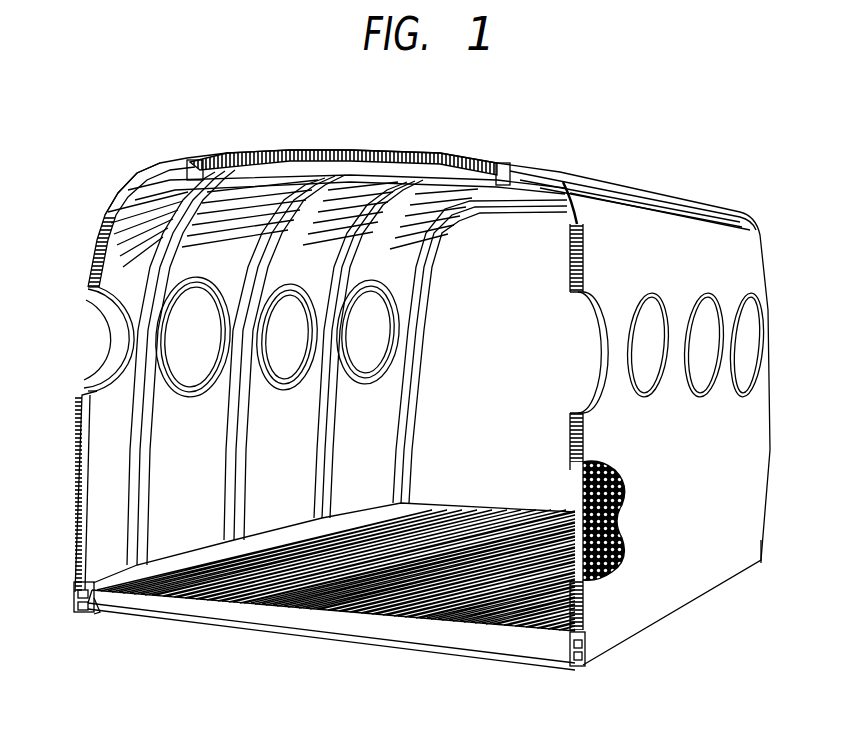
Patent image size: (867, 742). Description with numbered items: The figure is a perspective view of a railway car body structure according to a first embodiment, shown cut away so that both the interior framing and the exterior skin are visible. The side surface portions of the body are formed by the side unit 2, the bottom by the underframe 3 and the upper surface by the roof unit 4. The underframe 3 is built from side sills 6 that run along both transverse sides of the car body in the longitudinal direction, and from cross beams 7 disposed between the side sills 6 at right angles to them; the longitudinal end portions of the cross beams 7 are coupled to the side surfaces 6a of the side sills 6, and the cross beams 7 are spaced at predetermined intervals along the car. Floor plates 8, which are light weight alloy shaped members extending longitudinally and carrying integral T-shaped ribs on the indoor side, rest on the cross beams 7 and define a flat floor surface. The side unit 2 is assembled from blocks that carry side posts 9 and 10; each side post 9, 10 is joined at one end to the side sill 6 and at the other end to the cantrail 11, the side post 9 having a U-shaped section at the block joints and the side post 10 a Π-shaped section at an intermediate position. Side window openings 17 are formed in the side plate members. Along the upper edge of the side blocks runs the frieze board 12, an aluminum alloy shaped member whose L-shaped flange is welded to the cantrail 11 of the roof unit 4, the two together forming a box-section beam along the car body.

The side unit 2 is at (755, 458).
The underframe 3 is at (333, 599).
The roof unit 4 is at (453, 151).
The side sill 6 is at (78, 594).
The side surface of side sill 6a is at (98, 612).
The cross beam 7 is at (420, 657).
The floor plate 8 is at (340, 622).
The side post 9 is at (130, 466).
The side post 10 is at (240, 430).
The cantrail 11 is at (505, 168).
The frieze board 12 is at (118, 195).
The side window opening 17 is at (185, 330).